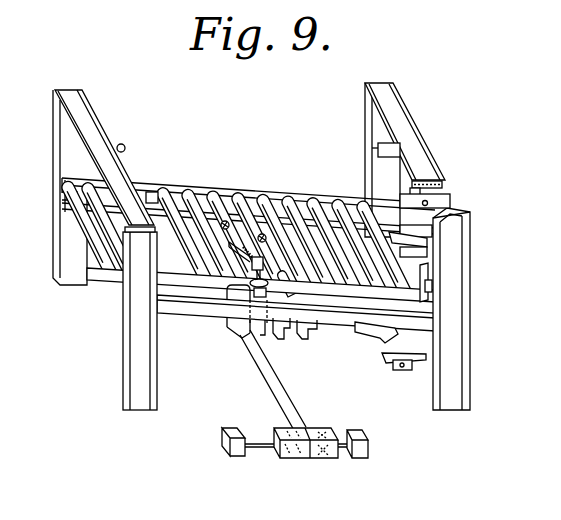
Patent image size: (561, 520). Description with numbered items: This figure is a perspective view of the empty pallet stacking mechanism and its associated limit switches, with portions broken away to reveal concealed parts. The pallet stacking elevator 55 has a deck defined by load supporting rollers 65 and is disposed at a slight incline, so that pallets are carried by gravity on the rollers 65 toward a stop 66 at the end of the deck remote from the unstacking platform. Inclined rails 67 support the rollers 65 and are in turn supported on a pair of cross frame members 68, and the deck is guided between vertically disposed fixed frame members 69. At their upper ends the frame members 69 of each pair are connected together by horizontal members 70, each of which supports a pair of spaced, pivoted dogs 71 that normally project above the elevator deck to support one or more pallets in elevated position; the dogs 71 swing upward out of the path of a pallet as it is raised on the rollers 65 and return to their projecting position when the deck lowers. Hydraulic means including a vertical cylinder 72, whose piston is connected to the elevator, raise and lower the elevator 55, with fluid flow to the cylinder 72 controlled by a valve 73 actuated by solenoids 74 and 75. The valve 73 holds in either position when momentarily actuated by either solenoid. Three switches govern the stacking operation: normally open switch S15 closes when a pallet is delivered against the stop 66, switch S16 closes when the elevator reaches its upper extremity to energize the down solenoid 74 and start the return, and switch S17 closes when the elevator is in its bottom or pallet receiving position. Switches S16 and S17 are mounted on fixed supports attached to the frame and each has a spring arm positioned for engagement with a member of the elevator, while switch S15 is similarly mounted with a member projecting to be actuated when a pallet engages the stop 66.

The pallet stacking elevator 55 is at (244, 185).
The load supporting rollers 65 is at (172, 208).
The stop 66 is at (370, 203).
The inclined rails 67 is at (182, 305).
The cross frame members 68 is at (292, 333).
The fixed frame members 69 is at (452, 340).
The horizontal members 70 is at (87, 113).
The pivoted dogs 71 is at (122, 145).
The vertical cylinder 72 is at (258, 338).
The valve 73 is at (297, 458).
The solenoid 74 is at (222, 450).
The solenoid 75 is at (366, 452).
The switch S15 is at (428, 290).
The switch S16 is at (422, 258).
The switch S17 is at (386, 363).